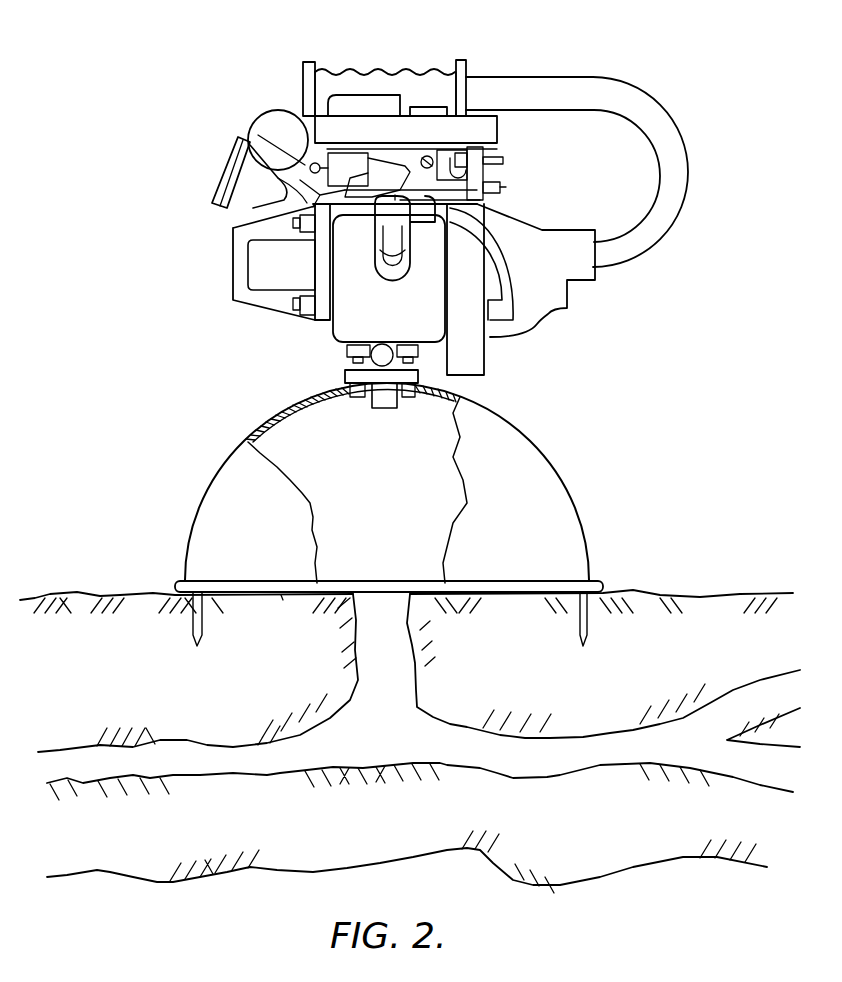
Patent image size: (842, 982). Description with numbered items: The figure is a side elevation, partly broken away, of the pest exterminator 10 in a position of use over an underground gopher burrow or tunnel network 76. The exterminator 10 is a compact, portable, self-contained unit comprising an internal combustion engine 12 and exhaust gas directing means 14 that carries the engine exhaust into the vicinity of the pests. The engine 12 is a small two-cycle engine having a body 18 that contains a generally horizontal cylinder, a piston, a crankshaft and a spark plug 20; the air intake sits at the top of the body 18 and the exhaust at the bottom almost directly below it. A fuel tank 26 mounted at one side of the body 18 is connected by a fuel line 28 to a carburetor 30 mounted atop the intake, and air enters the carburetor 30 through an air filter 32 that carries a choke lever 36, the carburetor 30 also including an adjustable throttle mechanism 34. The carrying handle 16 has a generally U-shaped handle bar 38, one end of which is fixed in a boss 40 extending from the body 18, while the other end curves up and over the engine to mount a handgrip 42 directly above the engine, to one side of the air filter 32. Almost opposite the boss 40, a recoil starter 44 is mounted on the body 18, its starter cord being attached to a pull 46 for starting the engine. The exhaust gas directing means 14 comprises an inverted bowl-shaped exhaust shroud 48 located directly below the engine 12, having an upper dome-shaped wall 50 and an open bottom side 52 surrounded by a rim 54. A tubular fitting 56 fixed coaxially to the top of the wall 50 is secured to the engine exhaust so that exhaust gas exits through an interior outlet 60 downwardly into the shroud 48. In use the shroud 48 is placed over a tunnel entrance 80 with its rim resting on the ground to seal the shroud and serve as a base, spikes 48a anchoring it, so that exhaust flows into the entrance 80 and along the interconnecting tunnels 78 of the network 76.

The pest exterminator 10 is at (648, 46).
The internal combustion engine 12 is at (248, 292).
The exhaust gas directing means 14 is at (234, 437).
The handle 16 is at (415, 75).
The engine body 18 is at (310, 322).
The spark plug 20 is at (396, 262).
The fuel tank 26 is at (308, 145).
The fuel line 28 is at (252, 148).
The carburetor 30 is at (415, 152).
The air filter 32 is at (343, 108).
The throttle mechanism 34 is at (488, 185).
The choke lever 36 is at (437, 105).
The handle bar 38 is at (668, 132).
The boss 40 is at (573, 275).
The handgrip 42 is at (346, 70).
The recoil starter 44 is at (240, 257).
The pull 46 is at (222, 175).
The exhaust shroud 48 is at (236, 491).
The spikes 48a is at (190, 634).
The dome-shaped wall 50 is at (503, 424).
The open bottom side 52 is at (545, 580).
The rim 54 is at (283, 605).
The tubular fitting 56 is at (346, 375).
The interior outlet 60 is at (385, 404).
The gopher tunnel network 76 is at (593, 757).
The tunnels 78 is at (615, 764).
The entrance 80 is at (418, 656).